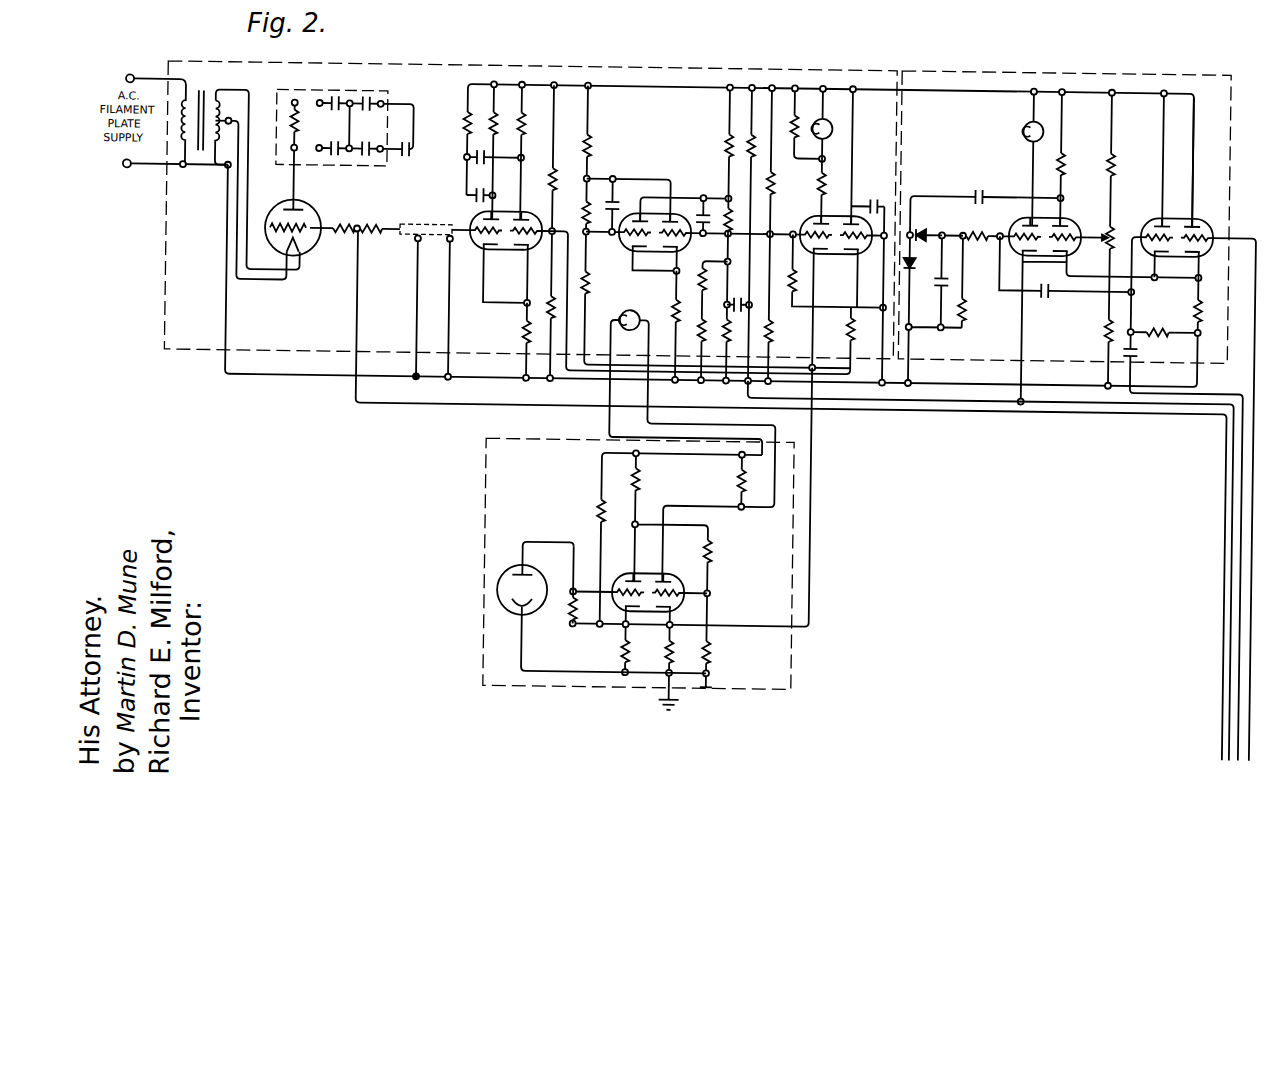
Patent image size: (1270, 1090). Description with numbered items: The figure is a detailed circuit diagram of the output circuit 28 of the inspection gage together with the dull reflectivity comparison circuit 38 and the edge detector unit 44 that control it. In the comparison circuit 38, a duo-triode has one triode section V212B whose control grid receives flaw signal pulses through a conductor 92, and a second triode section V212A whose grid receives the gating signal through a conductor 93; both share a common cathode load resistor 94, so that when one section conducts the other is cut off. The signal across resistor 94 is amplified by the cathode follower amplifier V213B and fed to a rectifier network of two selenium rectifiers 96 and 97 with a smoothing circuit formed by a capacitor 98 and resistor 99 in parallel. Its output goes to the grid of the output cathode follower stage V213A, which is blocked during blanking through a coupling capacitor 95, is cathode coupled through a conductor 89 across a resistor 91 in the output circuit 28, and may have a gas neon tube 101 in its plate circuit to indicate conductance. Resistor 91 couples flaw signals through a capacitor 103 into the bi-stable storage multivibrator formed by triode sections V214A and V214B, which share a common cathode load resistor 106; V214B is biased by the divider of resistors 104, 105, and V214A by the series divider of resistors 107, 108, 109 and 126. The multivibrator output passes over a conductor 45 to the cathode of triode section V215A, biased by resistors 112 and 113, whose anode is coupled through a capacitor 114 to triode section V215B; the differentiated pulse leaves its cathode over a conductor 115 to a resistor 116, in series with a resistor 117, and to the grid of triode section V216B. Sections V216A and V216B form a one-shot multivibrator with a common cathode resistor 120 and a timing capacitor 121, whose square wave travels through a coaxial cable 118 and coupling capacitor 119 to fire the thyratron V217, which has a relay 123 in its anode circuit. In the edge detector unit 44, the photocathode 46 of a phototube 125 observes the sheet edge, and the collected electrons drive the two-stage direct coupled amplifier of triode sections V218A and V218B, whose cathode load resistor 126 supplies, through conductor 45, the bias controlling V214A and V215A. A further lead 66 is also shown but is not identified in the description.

The output circuit 28 is at (680, 64).
The dull reflectivity comparison circuit 38 is at (1078, 64).
The edge detector unit 44 is at (800, 507).
The conductor 45 is at (589, 301).
The photocathode 46 is at (538, 612).
The connecting lead 66 is at (358, 304).
The conductor 89 is at (963, 393).
The resistor 91 is at (733, 327).
The conductor 92 is at (1250, 230).
The conductor 93 is at (1137, 297).
The common cathode load resistor 94 is at (1204, 295).
The coupling capacitor 95 is at (1047, 288).
The selenium rectifier 96 is at (926, 224).
The selenium rectifier 97 is at (915, 262).
The capacitor 98 is at (940, 284).
The resistor 99 is at (968, 300).
The gas neon tube 101 is at (1026, 120).
The capacitor 103 is at (733, 295).
The resistor 104 is at (733, 205).
The resistor 105 is at (727, 146).
The common cathode load resistor 106 is at (677, 308).
The resistor 107 is at (592, 145).
The resistor 108 is at (585, 222).
The resistor 109 is at (590, 278).
The resistor 112 is at (778, 184).
The resistor 113 is at (778, 324).
The coupling capacitor 114 is at (875, 195).
The conductor 115 is at (852, 327).
The resistor 116 is at (553, 305).
The resistor 117 is at (552, 175).
The coaxial cable 118 is at (425, 302).
The coupling capacitor 119 is at (472, 193).
The common cathode resistor 120 is at (526, 330).
The timing capacitor 121 is at (471, 155).
The relay 123 is at (302, 129).
The phototube 125 is at (509, 566).
The cathode load resistor 126 is at (674, 647).
The triode section V212A is at (1152, 212).
The triode section V212B is at (1218, 202).
The output cathode follower stage V213A is at (1020, 217).
The cathode follower amplifier V213B is at (1070, 248).
The triode section V214A is at (636, 211).
The triode section V214B is at (678, 211).
The triode section V215A is at (807, 220).
The triode section V215B is at (850, 254).
The triode section V216A is at (474, 222).
The triode section V216B is at (522, 256).
The thyratron V217 is at (315, 217).
The triode section V218A is at (626, 573).
The triode section V218B is at (693, 582).